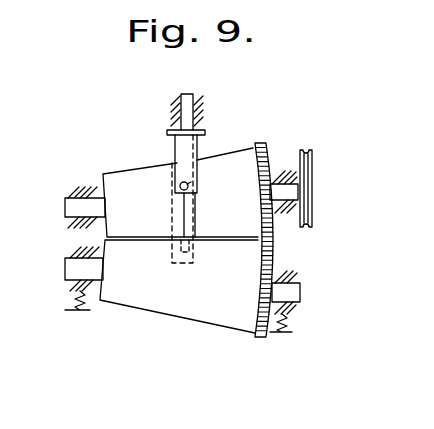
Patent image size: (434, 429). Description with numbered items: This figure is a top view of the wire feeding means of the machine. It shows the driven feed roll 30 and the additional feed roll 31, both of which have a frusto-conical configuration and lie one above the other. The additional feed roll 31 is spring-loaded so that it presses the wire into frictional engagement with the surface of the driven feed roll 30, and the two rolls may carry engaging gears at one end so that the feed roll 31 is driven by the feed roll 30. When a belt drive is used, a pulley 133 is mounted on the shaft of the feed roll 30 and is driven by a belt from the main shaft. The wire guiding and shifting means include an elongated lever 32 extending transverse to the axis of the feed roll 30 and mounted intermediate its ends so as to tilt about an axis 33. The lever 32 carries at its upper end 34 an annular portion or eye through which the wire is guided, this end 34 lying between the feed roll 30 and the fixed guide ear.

The feed roll 30 is at (120, 176).
The additional feed roll 31 is at (120, 296).
The elongated lever 32 is at (177, 145).
The axis 33 is at (195, 106).
The upper end of lever 34 is at (192, 183).
The pulley 133 is at (313, 178).